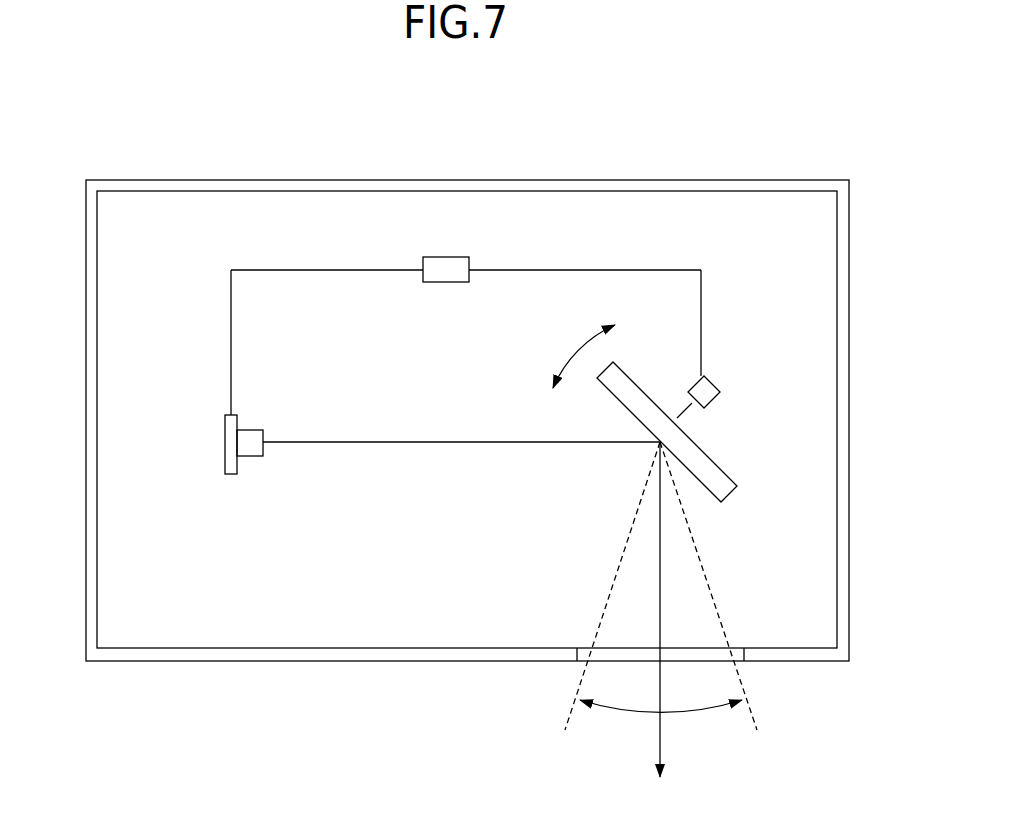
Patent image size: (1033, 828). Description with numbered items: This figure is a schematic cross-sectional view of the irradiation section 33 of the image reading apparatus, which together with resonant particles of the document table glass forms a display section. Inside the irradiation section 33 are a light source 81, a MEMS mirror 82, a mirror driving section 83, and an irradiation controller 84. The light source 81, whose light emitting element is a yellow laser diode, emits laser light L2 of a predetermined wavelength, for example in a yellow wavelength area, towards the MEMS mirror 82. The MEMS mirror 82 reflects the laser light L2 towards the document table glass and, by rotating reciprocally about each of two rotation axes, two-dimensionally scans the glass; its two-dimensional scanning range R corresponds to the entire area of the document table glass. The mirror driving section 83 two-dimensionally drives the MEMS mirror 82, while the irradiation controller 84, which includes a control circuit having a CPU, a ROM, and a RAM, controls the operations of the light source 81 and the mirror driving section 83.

The irradiation section 33 is at (802, 154).
The irradiation controller 84 is at (462, 268).
The light source 81 is at (248, 440).
The MEMS mirror 82 is at (635, 393).
The mirror driving section 83 is at (707, 390).
The laser light L2 is at (378, 446).
The scanning range R is at (627, 712).